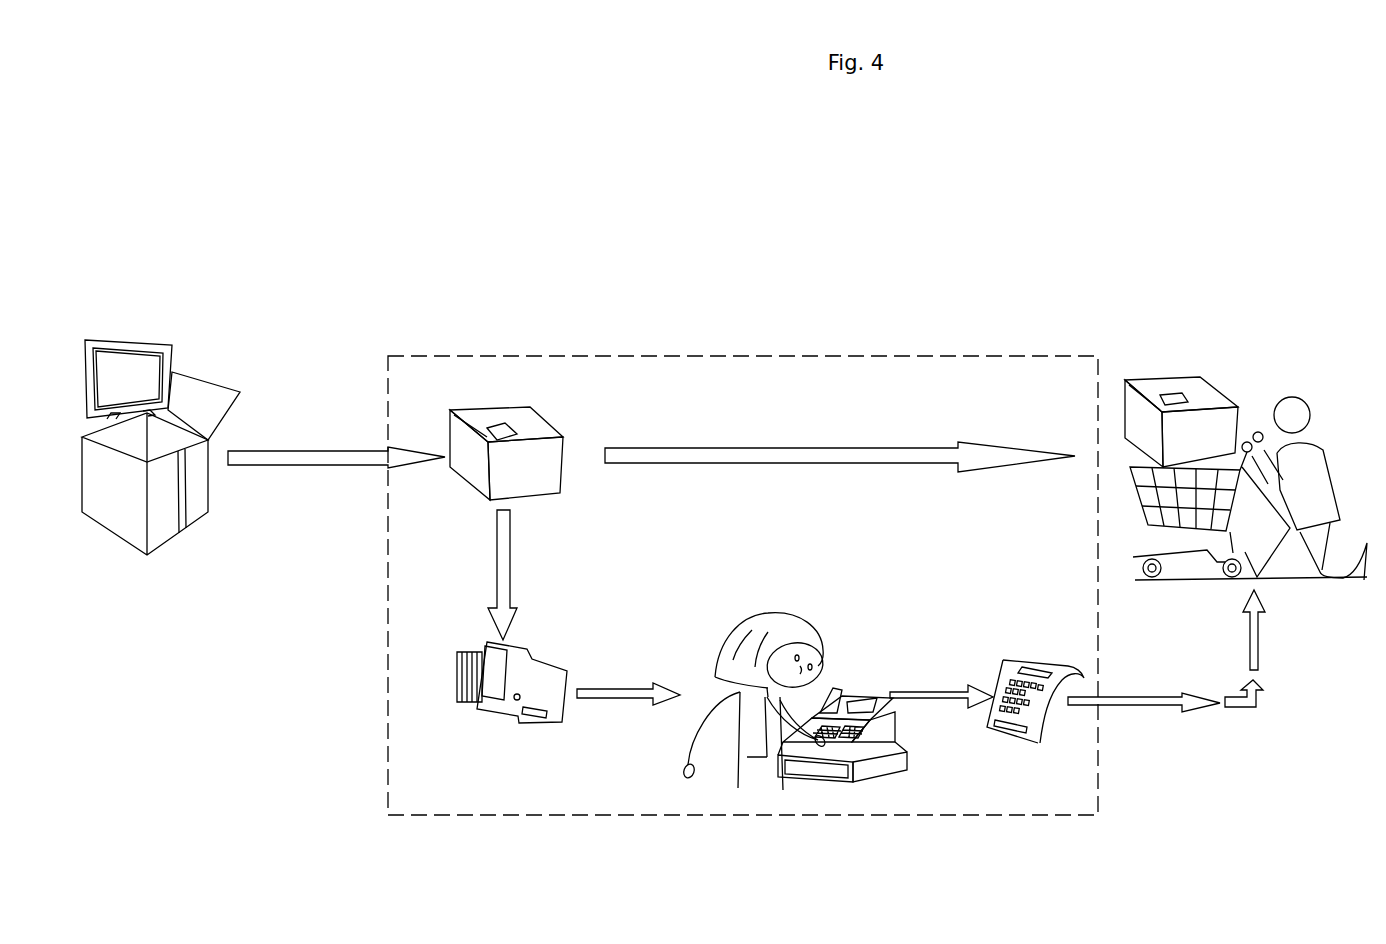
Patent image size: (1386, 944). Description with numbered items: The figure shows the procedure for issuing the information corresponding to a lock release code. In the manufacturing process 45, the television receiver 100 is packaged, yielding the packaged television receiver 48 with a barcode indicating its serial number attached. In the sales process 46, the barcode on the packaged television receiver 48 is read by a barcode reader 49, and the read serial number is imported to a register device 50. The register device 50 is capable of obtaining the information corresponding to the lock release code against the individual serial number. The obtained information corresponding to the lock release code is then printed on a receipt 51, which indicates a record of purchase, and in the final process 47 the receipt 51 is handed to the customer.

The manufacturing process 45 is at (178, 307).
The television receiver 100 is at (173, 370).
The packaged television receiver 48 is at (208, 441).
The sales process 46 is at (745, 357).
The barcode reader 49 is at (522, 648).
The register device 50 is at (848, 697).
The receipt 51 is at (1030, 652).
The process 47 is at (1282, 363).